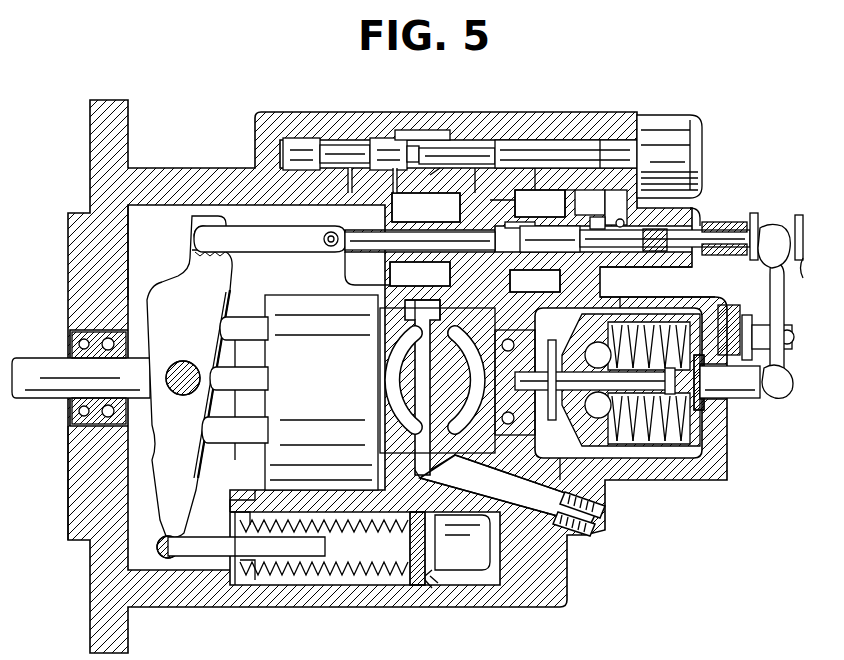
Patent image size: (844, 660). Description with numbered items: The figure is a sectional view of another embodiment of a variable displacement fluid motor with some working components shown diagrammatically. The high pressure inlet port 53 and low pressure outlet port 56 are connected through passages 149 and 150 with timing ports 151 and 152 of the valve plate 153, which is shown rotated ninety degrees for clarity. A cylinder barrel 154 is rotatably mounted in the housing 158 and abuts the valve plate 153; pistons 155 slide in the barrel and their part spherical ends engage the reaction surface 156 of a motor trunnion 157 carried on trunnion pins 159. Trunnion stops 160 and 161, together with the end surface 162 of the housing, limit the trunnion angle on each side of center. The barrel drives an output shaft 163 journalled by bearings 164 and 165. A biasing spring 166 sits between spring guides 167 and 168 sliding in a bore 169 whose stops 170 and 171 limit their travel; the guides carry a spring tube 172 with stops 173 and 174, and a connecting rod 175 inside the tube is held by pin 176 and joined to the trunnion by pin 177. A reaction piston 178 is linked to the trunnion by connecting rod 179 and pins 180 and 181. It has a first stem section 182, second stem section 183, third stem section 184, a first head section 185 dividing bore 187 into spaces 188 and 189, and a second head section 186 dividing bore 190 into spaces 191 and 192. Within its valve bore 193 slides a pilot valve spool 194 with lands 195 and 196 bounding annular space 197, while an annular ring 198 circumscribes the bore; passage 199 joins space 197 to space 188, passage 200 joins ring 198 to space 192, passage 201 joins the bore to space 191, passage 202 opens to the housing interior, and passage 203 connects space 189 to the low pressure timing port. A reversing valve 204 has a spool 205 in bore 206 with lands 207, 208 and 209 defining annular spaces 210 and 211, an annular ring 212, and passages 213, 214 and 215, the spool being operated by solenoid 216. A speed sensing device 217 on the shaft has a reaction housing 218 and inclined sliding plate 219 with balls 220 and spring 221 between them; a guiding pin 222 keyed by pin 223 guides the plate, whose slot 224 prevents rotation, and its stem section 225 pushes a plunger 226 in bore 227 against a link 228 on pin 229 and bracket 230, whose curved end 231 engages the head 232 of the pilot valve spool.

The high pressure inlet port 53 is at (605, 498).
The low pressure outlet port 56 is at (596, 528).
The passage 149 is at (565, 470).
The passage 150 is at (565, 495).
The timing port 151 is at (404, 396).
The timing port 152 is at (472, 400).
The valve plate 153 is at (437, 380).
The cylinder barrel 154 is at (321, 392).
The pistons 155 is at (262, 445).
The reaction surface 156 is at (228, 445).
The motor trunnion 157 is at (222, 300).
The housing 158 is at (190, 168).
The trunnion pins 159 is at (183, 361).
The trunnion stop 160 is at (118, 445).
The trunnion stop 161 is at (152, 292).
The end surface 162 is at (131, 240).
The output shaft 163 is at (38, 358).
The bearing 164 is at (118, 327).
The bearing 165 is at (506, 330).
The biasing spring 166 is at (360, 585).
The spring guide 167 is at (300, 585).
The spring guide 168 is at (420, 585).
The bore 169 is at (432, 588).
The stop 170 is at (440, 580).
The stop 171 is at (262, 585).
The spring tube 172 is at (258, 510).
The stop 173 is at (242, 568).
The stop 174 is at (428, 478).
The connecting rod 175 is at (180, 542).
The pin 176 is at (462, 542).
The pin 177 is at (198, 536).
The reaction piston 178 is at (740, 230).
The connecting rod 179 is at (280, 252).
The pin 180 is at (325, 233).
The pin 181 is at (210, 233).
The first stem section 182 is at (350, 252).
The second stem section 183 is at (540, 203).
The third stem section 184 is at (657, 282).
The first head section 185 is at (426, 207).
The second head section 186 is at (590, 190).
The bore 187 is at (395, 180).
The space 188 is at (355, 285).
The space 189 is at (540, 168).
The bore 190 is at (566, 154).
The space 191 is at (572, 192).
The space 192 is at (616, 190).
The valve bore 193 is at (692, 212).
The pilot valve spool 194 is at (710, 255).
The land 195 is at (797, 218).
The land 196 is at (550, 239).
The annular space 197 is at (650, 252).
The annular ring 198 is at (622, 219).
The passage 199 is at (535, 281).
The passage 200 is at (592, 220).
The passage 201 is at (540, 226).
The passage 202 is at (420, 274).
The passage 203 is at (445, 300).
The reversing valve 204 is at (673, 134).
The spool 205 is at (660, 163).
The bore 206 is at (485, 148).
The land 207 is at (565, 140).
The land 208 is at (385, 138).
The land 209 is at (300, 138).
The annular space 210 is at (445, 130).
The annular space 211 is at (340, 145).
The annular ring 212 is at (413, 146).
The passage 213 is at (478, 185).
The passage 214 is at (445, 175).
The passage 215 is at (348, 180).
The solenoid 216 is at (700, 120).
The speed sensing device 217 is at (585, 322).
The reaction housing 218 is at (585, 350).
The inclined sliding plate 219 is at (632, 446).
The balls 220 is at (598, 420).
The spring 221 is at (658, 444).
The guiding pin 222 is at (512, 424).
The pin 223 is at (554, 420).
The slot 224 is at (622, 306).
The stem section 225 is at (700, 450).
The plunger 226 is at (745, 398).
The bore 227 is at (702, 412).
The link 228 is at (785, 395).
The pin 229 is at (793, 333).
The bracket 230 is at (786, 360).
The curved end 231 is at (768, 258).
The head 232 is at (801, 270).